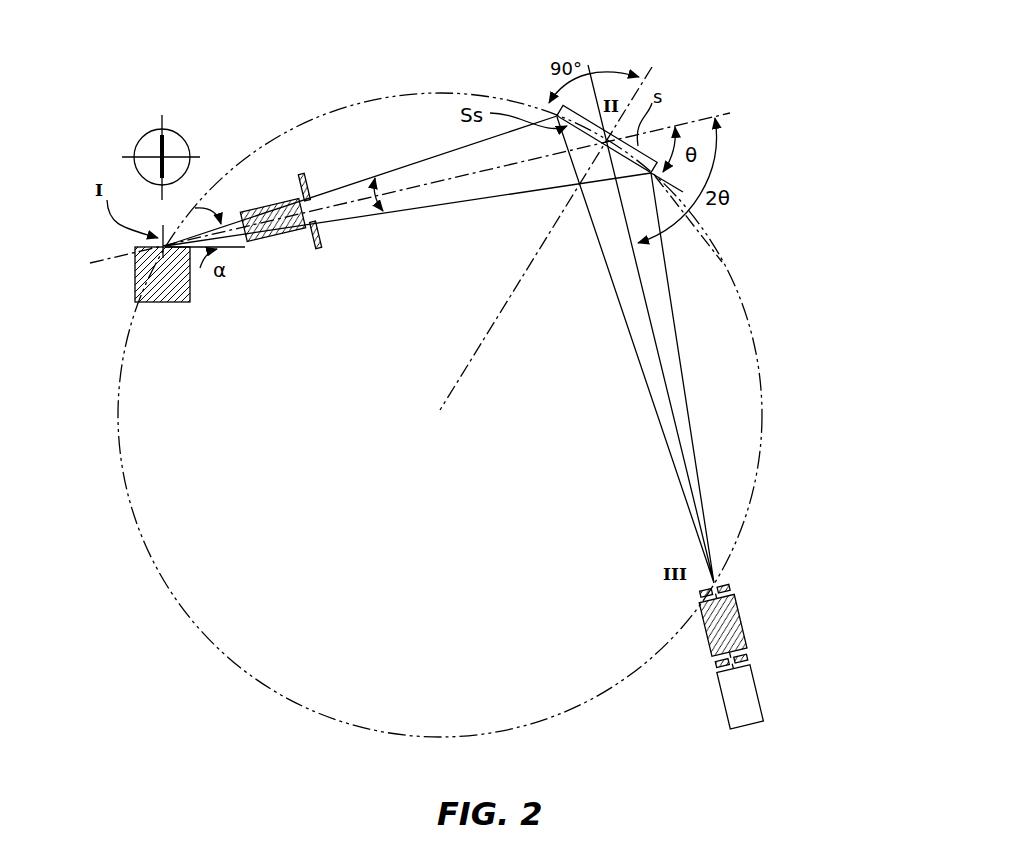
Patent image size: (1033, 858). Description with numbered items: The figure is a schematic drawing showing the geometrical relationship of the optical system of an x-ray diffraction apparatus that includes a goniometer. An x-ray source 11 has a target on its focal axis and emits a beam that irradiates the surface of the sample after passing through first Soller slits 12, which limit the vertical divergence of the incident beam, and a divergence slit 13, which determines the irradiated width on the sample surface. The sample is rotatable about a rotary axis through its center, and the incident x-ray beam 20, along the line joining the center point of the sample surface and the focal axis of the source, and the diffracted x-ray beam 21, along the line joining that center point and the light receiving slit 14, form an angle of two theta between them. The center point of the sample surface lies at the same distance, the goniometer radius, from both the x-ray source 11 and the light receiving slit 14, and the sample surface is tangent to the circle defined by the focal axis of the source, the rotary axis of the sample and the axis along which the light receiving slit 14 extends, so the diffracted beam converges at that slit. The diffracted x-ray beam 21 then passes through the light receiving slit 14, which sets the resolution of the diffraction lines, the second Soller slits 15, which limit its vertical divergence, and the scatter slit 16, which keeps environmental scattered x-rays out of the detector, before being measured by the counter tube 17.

The x-ray source 11 is at (165, 303).
The first Soller slits 12 is at (281, 244).
The divergence slit 13 is at (317, 250).
The light receiving slit 14 is at (733, 589).
The second Soller slits 15 is at (745, 621).
The scatter slit 16 is at (751, 660).
The counter tube 17 is at (761, 695).
The incident x-ray beam 20 is at (470, 177).
The diffracted x-ray beam 21 is at (652, 313).